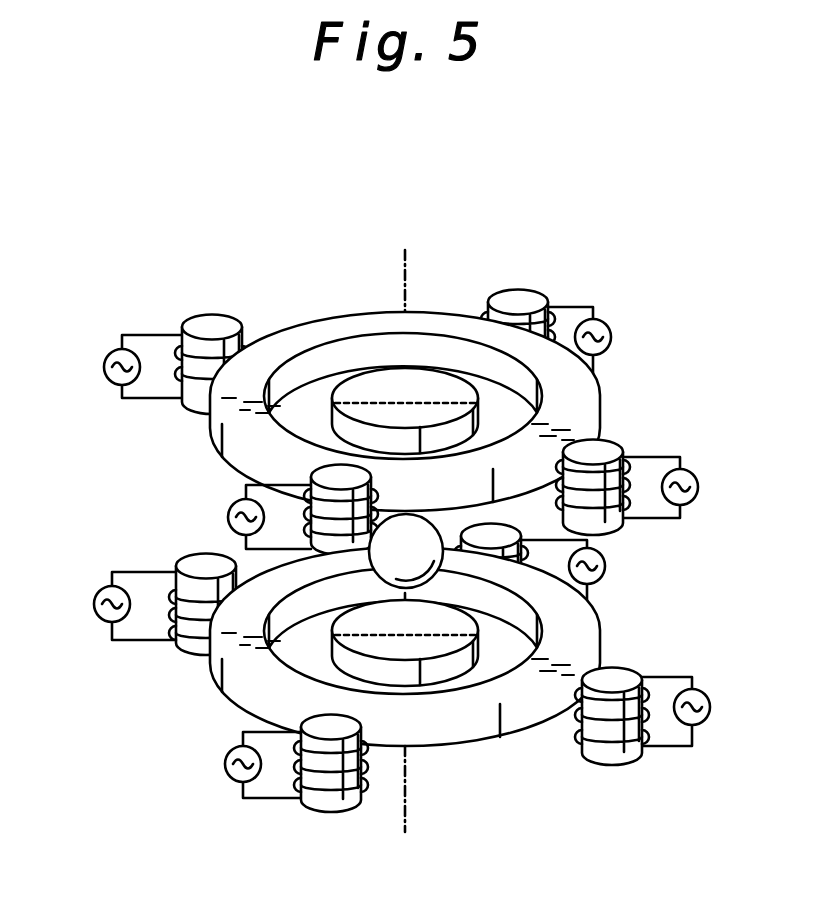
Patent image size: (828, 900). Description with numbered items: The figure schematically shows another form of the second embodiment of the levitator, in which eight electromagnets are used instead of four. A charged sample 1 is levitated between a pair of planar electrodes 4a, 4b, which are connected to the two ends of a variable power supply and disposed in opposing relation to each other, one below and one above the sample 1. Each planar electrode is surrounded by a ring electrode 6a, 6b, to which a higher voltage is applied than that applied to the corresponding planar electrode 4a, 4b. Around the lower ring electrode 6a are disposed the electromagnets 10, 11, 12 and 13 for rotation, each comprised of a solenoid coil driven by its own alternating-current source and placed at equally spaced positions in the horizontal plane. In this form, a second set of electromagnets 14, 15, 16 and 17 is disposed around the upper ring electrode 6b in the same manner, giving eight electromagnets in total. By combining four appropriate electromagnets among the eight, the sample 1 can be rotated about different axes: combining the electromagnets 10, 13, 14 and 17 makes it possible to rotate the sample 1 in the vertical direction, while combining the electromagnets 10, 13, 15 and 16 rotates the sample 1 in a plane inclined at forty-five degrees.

The sample 1 is at (441, 565).
The planar electrode 4a is at (465, 627).
The planar electrode 4b is at (423, 382).
The ring electrode 6a is at (582, 642).
The ring electrode 6b is at (578, 388).
The electromagnet 10 is at (335, 803).
The electromagnet 11 is at (614, 757).
The electromagnet 12 is at (488, 525).
The electromagnet 13 is at (195, 560).
The electromagnet 14 is at (330, 470).
The electromagnet 15 is at (612, 450).
The electromagnet 16 is at (518, 298).
The electromagnet 17 is at (212, 322).